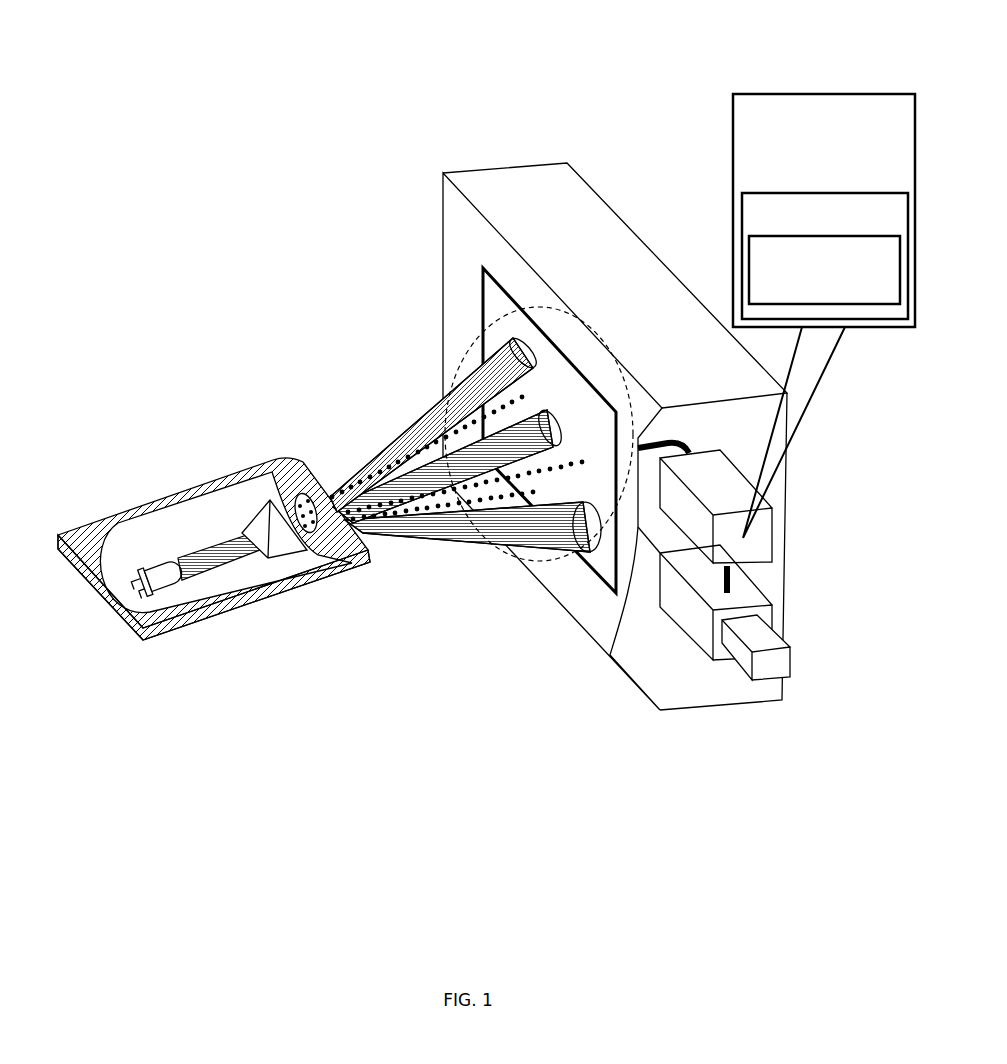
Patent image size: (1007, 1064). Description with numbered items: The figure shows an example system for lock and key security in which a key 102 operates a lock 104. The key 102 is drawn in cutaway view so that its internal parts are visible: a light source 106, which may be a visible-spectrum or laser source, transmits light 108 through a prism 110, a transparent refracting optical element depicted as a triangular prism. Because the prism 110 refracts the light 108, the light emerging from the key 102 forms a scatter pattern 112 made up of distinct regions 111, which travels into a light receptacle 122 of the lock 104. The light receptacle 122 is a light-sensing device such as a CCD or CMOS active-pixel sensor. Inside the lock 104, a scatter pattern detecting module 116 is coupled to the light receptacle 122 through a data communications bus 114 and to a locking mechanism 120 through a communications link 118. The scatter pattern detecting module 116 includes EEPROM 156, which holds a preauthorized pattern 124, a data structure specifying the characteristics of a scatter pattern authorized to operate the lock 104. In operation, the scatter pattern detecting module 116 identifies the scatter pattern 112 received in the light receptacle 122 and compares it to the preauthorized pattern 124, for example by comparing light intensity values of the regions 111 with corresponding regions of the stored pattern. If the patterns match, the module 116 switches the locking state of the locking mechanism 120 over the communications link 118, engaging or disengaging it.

The key 102 is at (303, 678).
The lock 104 is at (497, 78).
The light source 106 is at (146, 542).
The light 108 is at (205, 535).
The prism 110 is at (270, 490).
The regions 111 is at (575, 515).
The scatter pattern 112 is at (467, 322).
The data communications bus 114 is at (675, 425).
The scatter pattern detecting module 116 is at (787, 328).
The communications link 118 is at (742, 577).
The locking mechanism 120 is at (725, 680).
The light receptacle 122 is at (592, 570).
The preauthorized pattern 124 is at (824, 270).
The EEPROM 156 is at (825, 256).